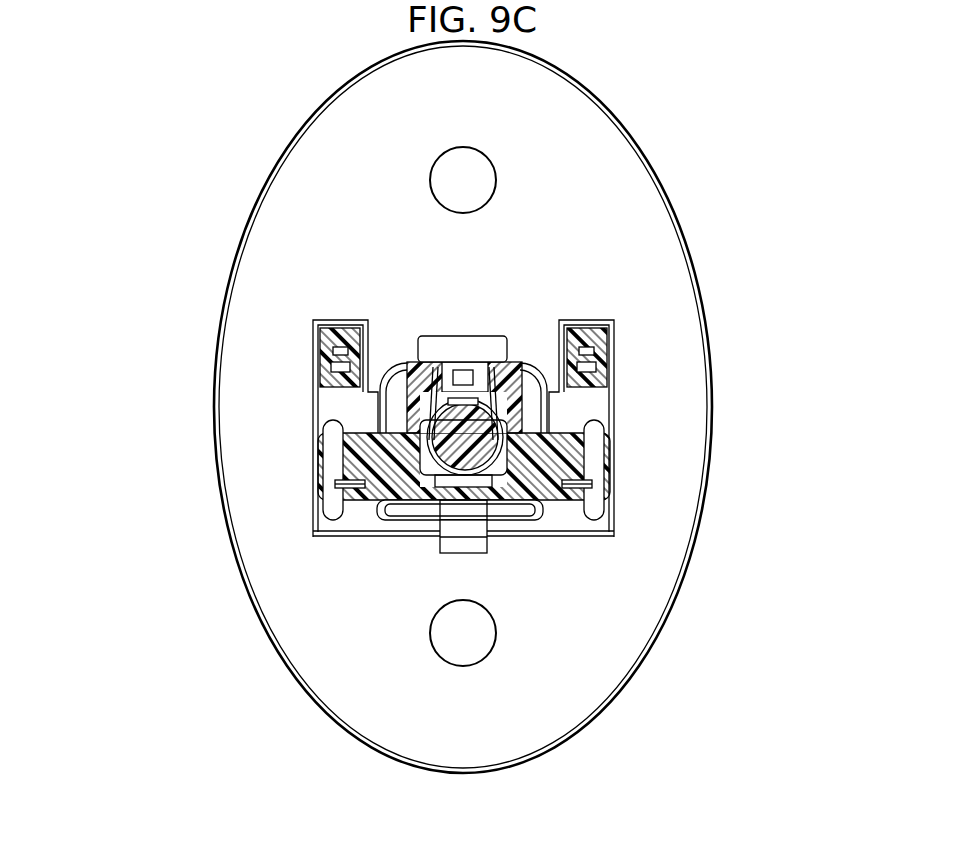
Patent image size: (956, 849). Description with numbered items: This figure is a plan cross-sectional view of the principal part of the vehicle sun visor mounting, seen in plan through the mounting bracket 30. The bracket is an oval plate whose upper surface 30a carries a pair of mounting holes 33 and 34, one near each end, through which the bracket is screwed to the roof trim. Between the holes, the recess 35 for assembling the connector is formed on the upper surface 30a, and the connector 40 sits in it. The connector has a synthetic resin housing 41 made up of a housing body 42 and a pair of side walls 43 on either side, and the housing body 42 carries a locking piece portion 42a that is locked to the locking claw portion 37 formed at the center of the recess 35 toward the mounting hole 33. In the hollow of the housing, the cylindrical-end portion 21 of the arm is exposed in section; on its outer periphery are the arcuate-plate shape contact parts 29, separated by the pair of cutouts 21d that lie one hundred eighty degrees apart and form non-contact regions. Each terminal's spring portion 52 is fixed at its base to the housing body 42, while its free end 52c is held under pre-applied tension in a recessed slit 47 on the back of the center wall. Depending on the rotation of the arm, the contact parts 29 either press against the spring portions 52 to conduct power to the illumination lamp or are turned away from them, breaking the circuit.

The mounting bracket 30 is at (692, 262).
The upper surface of the mounting bracket 30a is at (631, 229).
The mounting hole 34 is at (478, 163).
The mounting hole 33 is at (475, 650).
The housing 41 is at (616, 458).
The side wall 43 is at (336, 357).
The connector 40 is at (357, 501).
The spring portion 52 is at (362, 401).
The recess for assembling the connector 35 is at (576, 519).
The slit 47 is at (424, 366).
The contact part 29 is at (402, 398).
The free end 52c is at (436, 366).
The cylindrical-end portion 21 is at (488, 478).
The cutout 21d is at (464, 370).
The housing body 42 is at (605, 500).
The locking piece portion 42a is at (476, 520).
The locking claw portion 37 is at (463, 536).